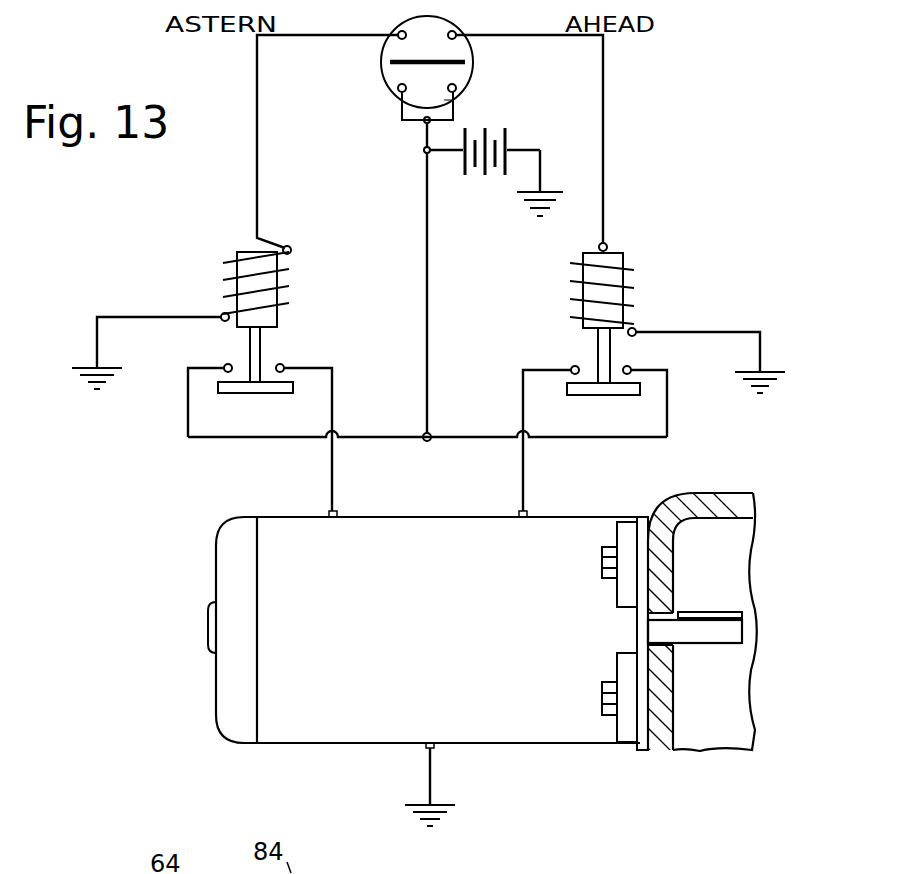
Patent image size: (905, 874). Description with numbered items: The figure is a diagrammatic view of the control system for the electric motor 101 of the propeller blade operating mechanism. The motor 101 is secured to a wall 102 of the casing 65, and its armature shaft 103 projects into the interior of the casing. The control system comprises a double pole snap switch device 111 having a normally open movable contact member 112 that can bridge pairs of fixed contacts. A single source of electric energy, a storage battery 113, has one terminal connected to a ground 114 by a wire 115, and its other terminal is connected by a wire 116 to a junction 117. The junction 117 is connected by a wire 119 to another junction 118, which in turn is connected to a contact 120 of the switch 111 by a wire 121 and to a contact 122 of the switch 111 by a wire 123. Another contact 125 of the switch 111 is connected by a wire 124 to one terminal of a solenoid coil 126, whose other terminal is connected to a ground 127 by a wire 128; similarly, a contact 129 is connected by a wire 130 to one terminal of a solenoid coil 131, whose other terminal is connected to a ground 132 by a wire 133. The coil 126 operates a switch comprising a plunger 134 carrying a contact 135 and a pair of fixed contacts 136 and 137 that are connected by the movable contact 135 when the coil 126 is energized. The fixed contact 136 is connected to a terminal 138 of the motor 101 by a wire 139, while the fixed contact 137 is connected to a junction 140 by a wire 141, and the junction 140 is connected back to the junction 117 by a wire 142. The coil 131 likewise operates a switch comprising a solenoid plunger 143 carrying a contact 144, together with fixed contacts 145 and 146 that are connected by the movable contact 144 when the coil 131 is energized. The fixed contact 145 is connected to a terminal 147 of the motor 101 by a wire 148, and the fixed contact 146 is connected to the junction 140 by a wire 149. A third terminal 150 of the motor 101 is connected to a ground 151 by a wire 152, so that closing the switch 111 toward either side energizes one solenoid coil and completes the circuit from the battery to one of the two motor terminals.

The casing 65 is at (740, 492).
The electric motor 101 is at (424, 630).
The wall 102 is at (665, 589).
The shaft 103 is at (713, 633).
The double pole snap switch device 111 is at (460, 50).
The movable contact member 112 is at (398, 58).
The storage battery 113 is at (513, 140).
The ground 114 is at (520, 212).
The wire 115 is at (553, 150).
The wire 116 is at (450, 160).
The junction 117 is at (424, 153).
The junction 118 is at (424, 122).
The wire 119 is at (425, 137).
The contact 120 is at (457, 88).
The wire 121 is at (455, 105).
The contact 122 is at (398, 89).
The wire 123 is at (404, 106).
The wire 124 is at (604, 133).
The contact 125 is at (455, 32).
The solenoid coil 126 is at (620, 250).
The ground 127 is at (772, 364).
The wire 128 is at (706, 330).
The contact 129 is at (399, 32).
The wire 130 is at (256, 78).
The solenoid coil 131 is at (283, 270).
The ground 132 is at (84, 381).
The wire 133 is at (160, 318).
The plunger 134 is at (580, 300).
The contact 135 is at (605, 395).
The fixed contact 136 is at (574, 366).
The fixed contact 137 is at (629, 367).
The terminal 138 is at (529, 514).
The wire 139 is at (525, 461).
The junction 140 is at (424, 442).
The wire 141 is at (480, 434).
The wire 142 is at (428, 277).
The solenoid plunger 143 is at (232, 263).
The contact 144 is at (270, 392).
The fixed contact 145 is at (283, 366).
The fixed contact 146 is at (226, 365).
The terminal 147 is at (340, 516).
The wire 148 is at (331, 468).
The wire 149 is at (188, 438).
The third terminal 150 is at (435, 746).
The ground 151 is at (452, 811).
The wire 152 is at (428, 772).